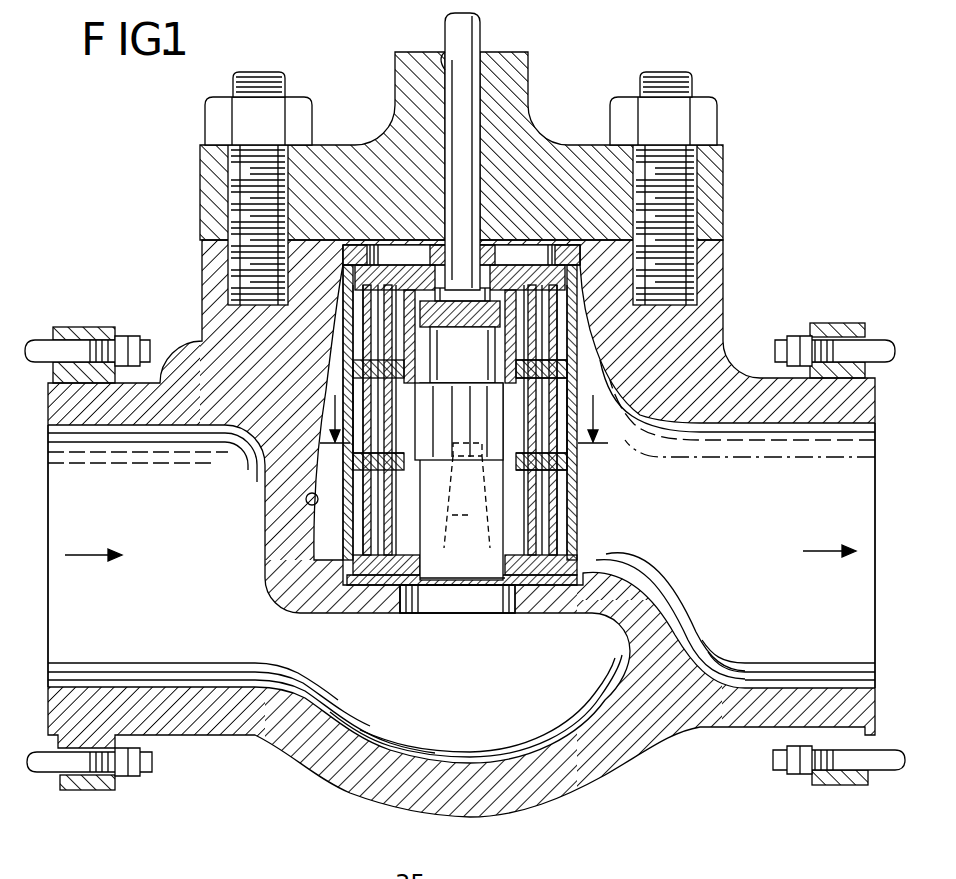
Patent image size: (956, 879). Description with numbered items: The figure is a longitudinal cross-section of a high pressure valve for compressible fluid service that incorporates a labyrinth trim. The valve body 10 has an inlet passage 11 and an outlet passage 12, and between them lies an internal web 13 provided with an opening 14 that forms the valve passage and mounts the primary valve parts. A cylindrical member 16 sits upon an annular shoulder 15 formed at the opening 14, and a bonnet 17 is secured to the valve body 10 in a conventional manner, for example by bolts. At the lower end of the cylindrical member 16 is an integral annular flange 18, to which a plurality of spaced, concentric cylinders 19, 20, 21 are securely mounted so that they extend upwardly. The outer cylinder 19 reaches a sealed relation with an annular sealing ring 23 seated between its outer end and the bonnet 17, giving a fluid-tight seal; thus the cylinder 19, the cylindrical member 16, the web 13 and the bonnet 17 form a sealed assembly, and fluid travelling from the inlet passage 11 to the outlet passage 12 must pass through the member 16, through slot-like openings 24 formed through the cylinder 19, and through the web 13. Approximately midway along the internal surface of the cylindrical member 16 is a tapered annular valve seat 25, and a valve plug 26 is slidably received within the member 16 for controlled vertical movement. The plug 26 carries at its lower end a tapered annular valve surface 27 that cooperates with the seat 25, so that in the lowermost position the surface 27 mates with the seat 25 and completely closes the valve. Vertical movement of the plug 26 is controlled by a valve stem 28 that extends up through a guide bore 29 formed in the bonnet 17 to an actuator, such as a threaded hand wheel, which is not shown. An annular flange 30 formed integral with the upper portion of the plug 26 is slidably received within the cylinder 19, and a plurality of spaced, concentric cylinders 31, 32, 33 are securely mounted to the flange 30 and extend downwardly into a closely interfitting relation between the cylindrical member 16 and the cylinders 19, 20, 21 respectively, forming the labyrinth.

The valve body 10 is at (756, 283).
The inlet passage 11 is at (92, 427).
The outlet passage 12 is at (818, 427).
The internal web 13 is at (306, 499).
The opening 14 is at (402, 592).
The annular shoulder 15 is at (515, 588).
The cylindrical member 16 is at (540, 571).
The bonnet 17 is at (723, 185).
The annular flange 18 is at (352, 560).
The outer cylinder 19 is at (580, 460).
The concentric cylinder 20 is at (555, 545).
The concentric cylinder 21 is at (560, 520).
The annular sealing ring 23 is at (461, 256).
The slot-like openings 24 is at (345, 390).
The tapered annular valve seat 25 is at (458, 470).
The valve plug 26 is at (492, 350).
The tapered annular valve surface 27 is at (428, 380).
The valve stem 28 is at (470, 33).
The guide bore 29 is at (446, 58).
The annular flange 30 is at (541, 268).
The concentric cylinder 31 is at (575, 485).
The concentric cylinder 32 is at (385, 487).
The concentric cylinder 33 is at (550, 503).